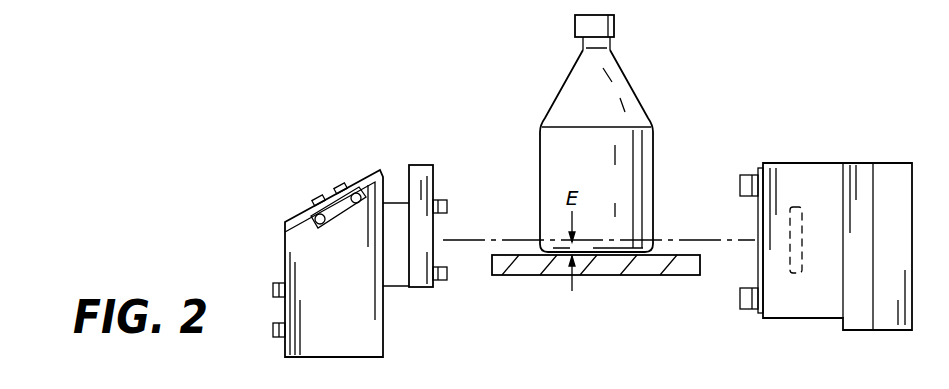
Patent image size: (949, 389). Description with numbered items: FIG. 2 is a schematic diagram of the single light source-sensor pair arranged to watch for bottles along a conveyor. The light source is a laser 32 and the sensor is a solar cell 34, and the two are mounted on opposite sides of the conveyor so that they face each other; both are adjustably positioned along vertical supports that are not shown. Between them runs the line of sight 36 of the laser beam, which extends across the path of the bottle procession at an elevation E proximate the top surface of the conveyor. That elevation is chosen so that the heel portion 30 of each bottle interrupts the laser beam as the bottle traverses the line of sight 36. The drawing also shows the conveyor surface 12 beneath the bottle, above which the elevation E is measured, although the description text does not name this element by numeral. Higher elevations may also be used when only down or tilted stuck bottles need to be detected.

The support plate 12 is at (637, 268).
The heel portion 30 is at (652, 251).
The laser 32 is at (290, 249).
The solar cell 34 is at (795, 200).
The line of sight 36 is at (539, 240).